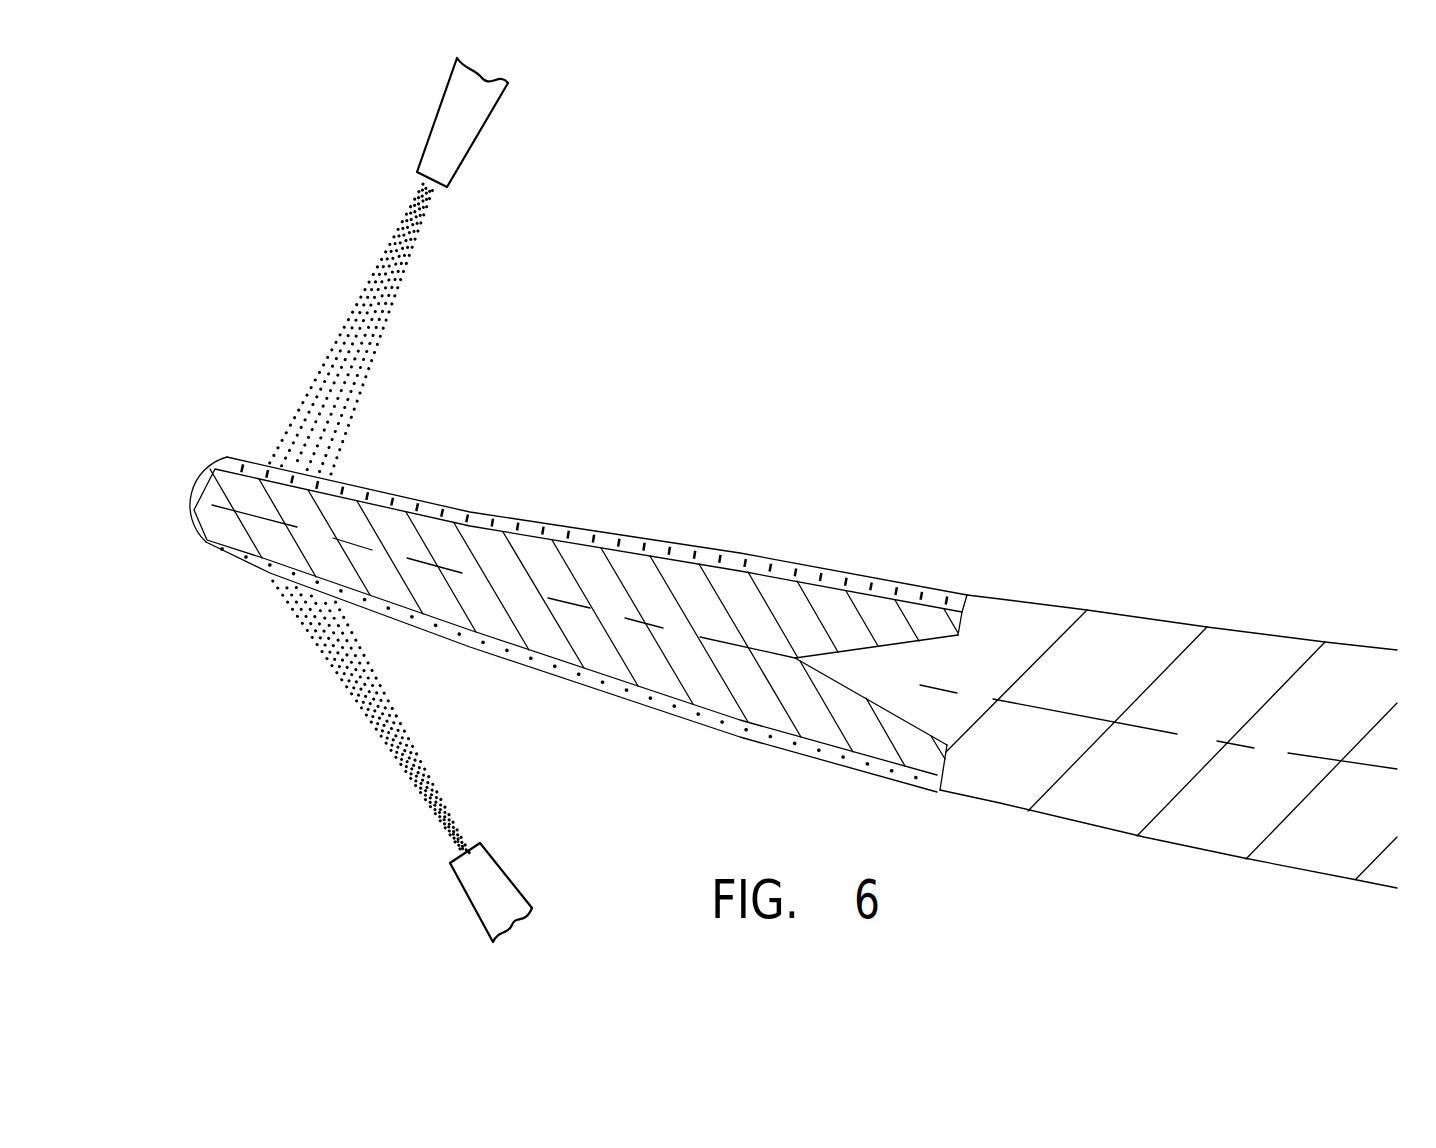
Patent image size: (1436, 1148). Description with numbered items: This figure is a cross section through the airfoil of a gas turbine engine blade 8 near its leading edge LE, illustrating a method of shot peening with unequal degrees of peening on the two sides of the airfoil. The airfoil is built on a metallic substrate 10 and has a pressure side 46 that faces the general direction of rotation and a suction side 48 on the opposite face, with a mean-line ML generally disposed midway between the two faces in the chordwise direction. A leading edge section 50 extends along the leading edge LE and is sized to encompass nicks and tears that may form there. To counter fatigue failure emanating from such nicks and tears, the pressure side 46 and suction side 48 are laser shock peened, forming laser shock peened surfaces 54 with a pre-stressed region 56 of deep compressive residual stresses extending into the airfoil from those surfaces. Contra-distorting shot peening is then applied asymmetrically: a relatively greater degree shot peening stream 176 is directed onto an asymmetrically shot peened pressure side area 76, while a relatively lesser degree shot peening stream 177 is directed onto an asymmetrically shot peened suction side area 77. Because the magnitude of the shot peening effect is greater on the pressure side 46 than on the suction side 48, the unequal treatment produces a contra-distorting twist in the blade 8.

The gas turbine engine blade 8 is at (764, 420).
The metallic substrate 10 is at (1025, 600).
The pressure side 46 is at (1137, 617).
The suction side 48 is at (687, 720).
The leading edge section 50 is at (193, 533).
The laser shock peened surface 54 is at (333, 473).
The pre-stressed region 56 is at (455, 512).
The asymmetrically shot peened pressure side area 76 is at (827, 568).
The asymmetrically shot peened suction side area 77 is at (803, 757).
The greater degree shot peening stream 176 is at (360, 340).
The lesser degree shot peening stream 177 is at (413, 765).
The leading edge LE is at (192, 510).
The mean-line ML is at (1070, 717).